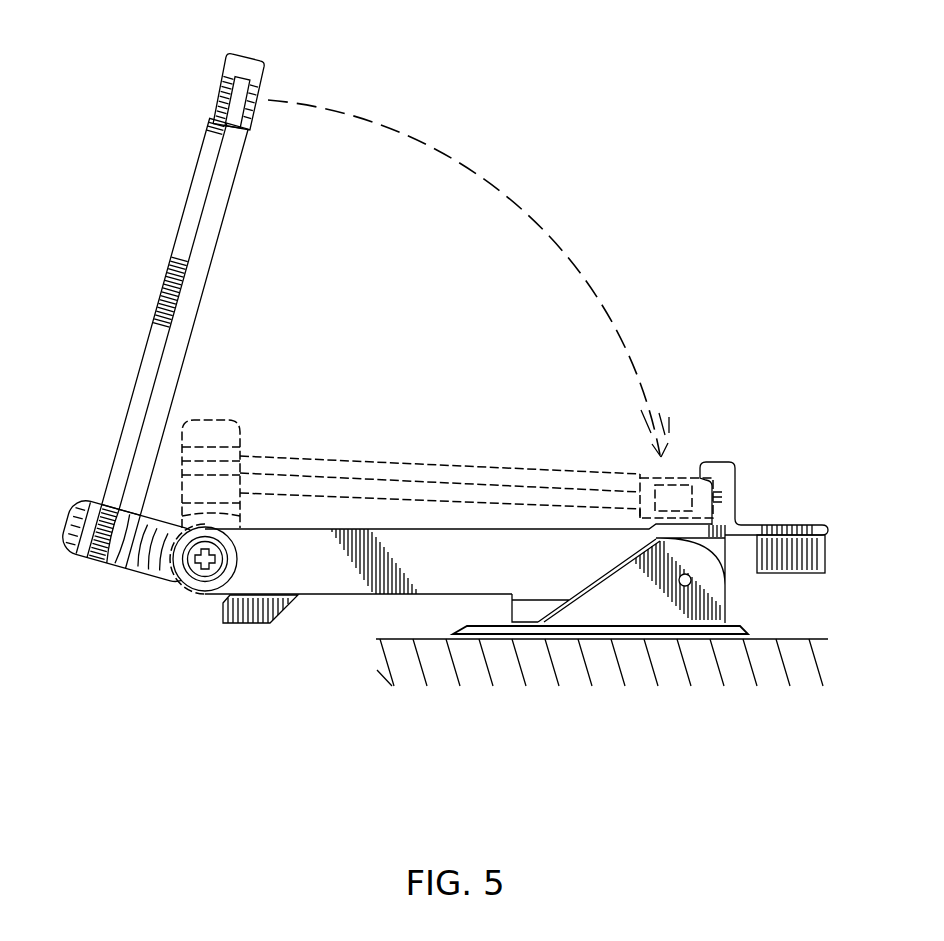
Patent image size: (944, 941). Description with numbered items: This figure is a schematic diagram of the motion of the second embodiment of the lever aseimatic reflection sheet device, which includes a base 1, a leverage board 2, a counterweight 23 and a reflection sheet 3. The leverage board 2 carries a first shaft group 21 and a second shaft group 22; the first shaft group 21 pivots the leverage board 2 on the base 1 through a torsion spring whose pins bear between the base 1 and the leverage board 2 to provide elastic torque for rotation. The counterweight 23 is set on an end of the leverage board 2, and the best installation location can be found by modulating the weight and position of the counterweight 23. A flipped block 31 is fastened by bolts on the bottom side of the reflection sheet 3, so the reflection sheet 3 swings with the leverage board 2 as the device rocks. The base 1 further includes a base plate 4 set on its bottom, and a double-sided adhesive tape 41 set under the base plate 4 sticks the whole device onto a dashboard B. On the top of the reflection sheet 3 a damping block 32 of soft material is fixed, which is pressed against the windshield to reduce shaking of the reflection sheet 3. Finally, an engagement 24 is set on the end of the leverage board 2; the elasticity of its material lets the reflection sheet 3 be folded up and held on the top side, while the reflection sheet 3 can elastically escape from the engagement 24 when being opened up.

The base 1 is at (708, 598).
The leverage board 2 is at (437, 543).
The reflection sheet 3 is at (168, 262).
The base plate 4 is at (467, 626).
The first shaft group 21 is at (692, 580).
The second shaft group 22 is at (203, 572).
The counterweight 23 is at (787, 545).
The engagement 24 is at (700, 474).
The flipped block 31 is at (168, 575).
The damping block 32 is at (228, 60).
The double-sided adhesive tape 41 is at (705, 658).
The dashboard B is at (405, 639).